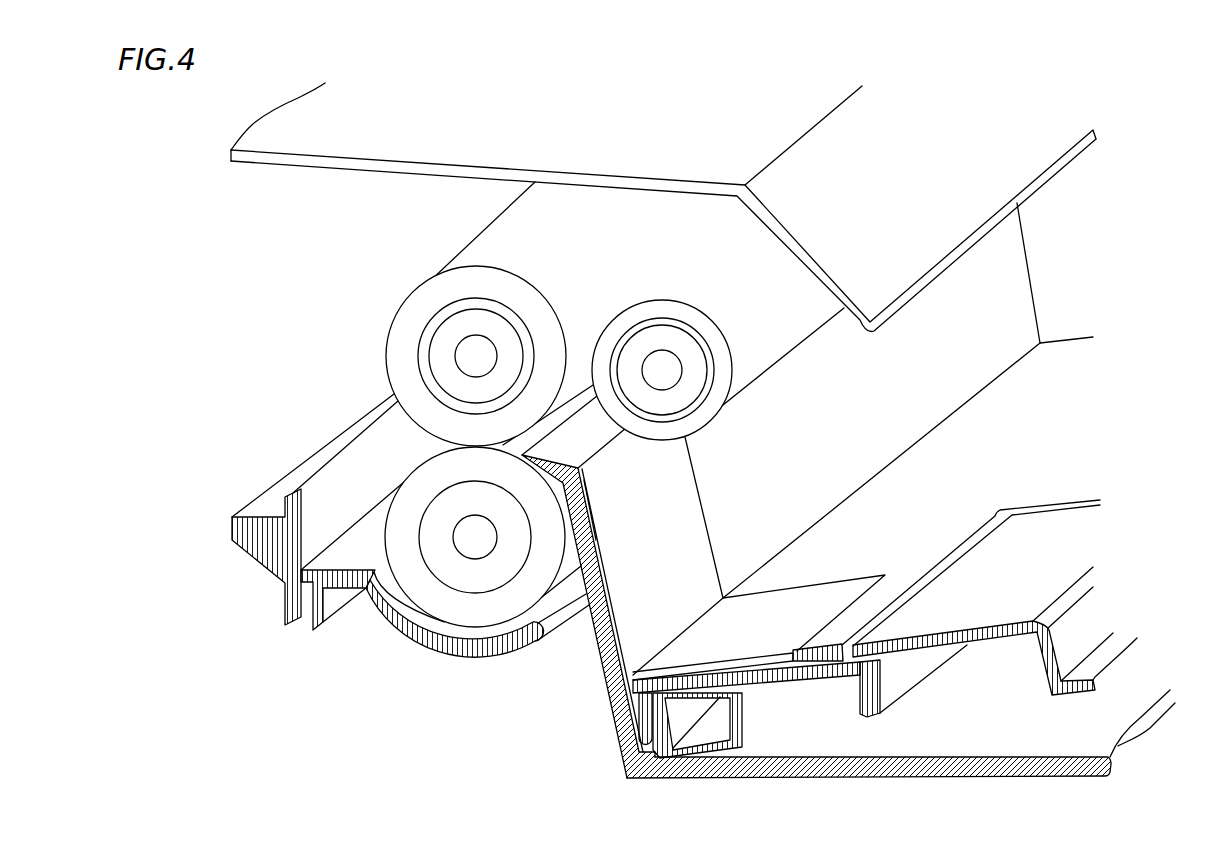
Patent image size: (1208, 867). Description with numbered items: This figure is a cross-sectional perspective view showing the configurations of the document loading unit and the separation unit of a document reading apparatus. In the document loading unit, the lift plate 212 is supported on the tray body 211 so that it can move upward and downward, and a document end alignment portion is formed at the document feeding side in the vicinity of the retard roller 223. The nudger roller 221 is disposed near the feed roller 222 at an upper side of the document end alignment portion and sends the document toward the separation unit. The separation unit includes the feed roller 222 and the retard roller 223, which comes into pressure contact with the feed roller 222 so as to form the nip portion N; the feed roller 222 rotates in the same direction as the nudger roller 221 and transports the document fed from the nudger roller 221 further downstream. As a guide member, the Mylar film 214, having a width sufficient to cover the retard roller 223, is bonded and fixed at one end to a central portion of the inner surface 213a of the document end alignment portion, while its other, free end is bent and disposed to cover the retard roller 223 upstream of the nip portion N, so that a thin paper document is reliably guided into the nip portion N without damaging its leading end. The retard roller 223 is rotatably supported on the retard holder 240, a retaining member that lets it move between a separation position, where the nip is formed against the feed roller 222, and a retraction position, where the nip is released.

The tray body 211 is at (1028, 757).
The lift plate 212 is at (939, 511).
The inner surface of the document end alignment portion 213a is at (860, 427).
The Mylar film 214 is at (597, 438).
The nudger roller 221 is at (710, 320).
The feed roller 222 is at (425, 287).
The retard roller 223 is at (428, 473).
The retard holder 240 is at (333, 577).
The nip portion N is at (589, 518).